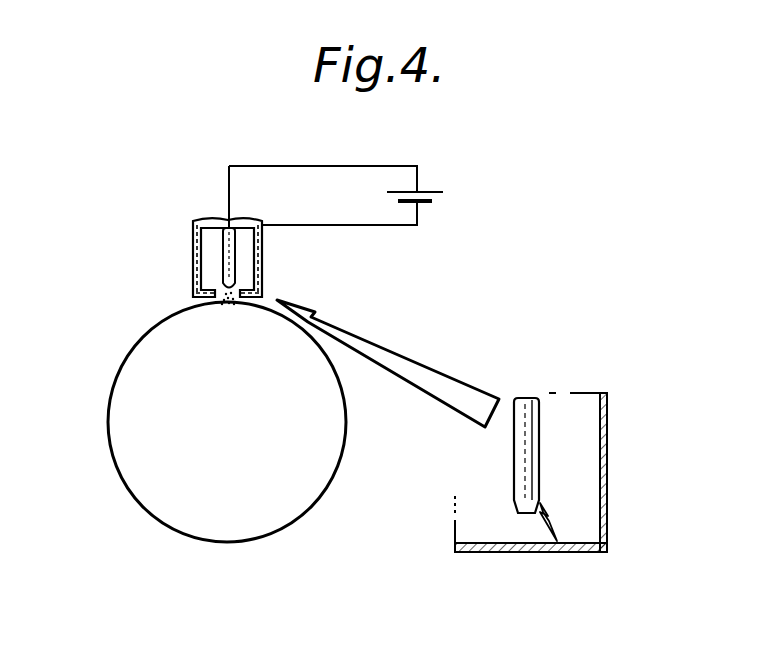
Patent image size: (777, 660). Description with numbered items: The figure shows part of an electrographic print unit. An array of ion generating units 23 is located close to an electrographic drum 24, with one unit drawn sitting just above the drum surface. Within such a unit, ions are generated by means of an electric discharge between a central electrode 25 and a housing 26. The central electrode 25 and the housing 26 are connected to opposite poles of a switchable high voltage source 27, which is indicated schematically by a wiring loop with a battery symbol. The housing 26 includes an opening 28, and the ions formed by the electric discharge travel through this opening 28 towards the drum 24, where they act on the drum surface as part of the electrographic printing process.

The ion generating unit 23 is at (181, 239).
The electrographic drum 24 is at (139, 529).
The central electrode 25 is at (529, 399).
The housing 26 is at (593, 552).
The switchable high voltage source 27 is at (430, 193).
The opening 28 is at (520, 552).